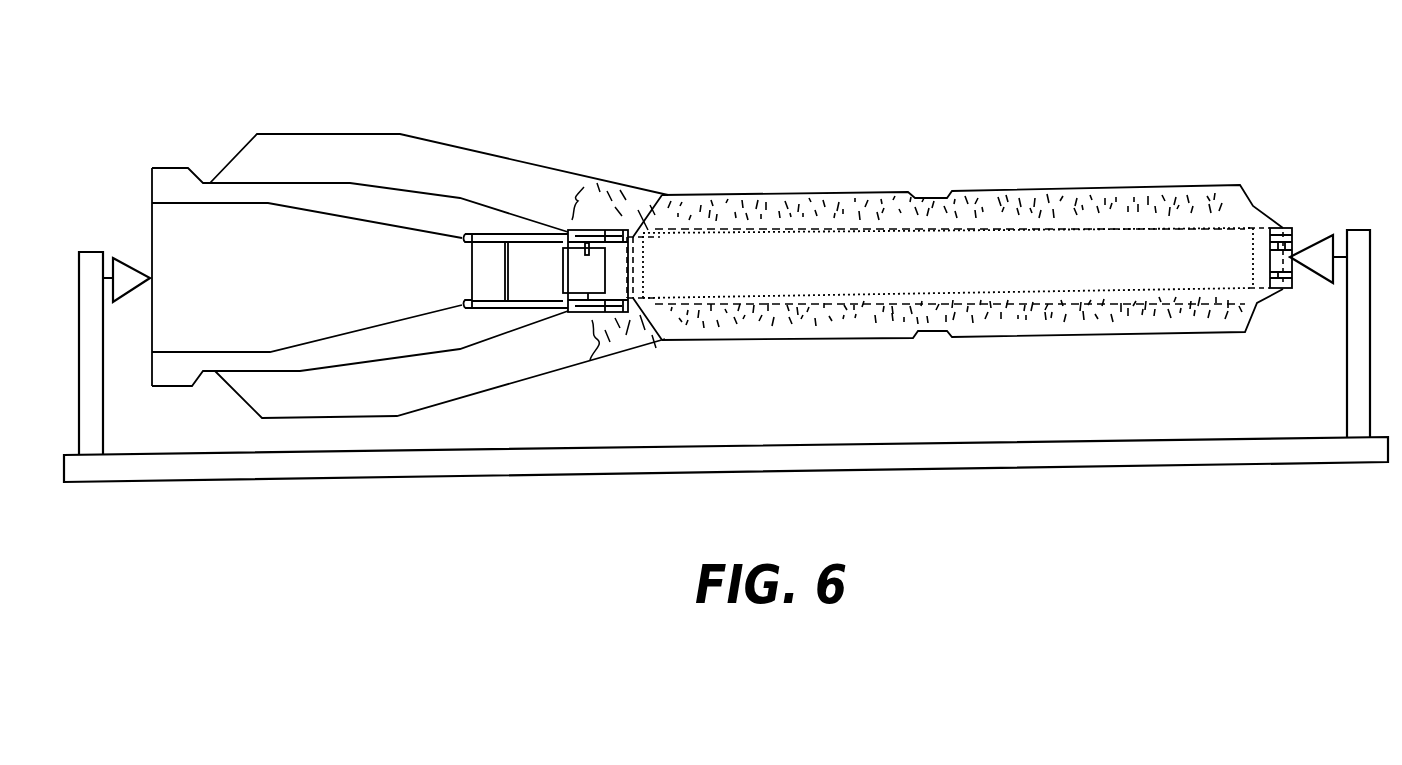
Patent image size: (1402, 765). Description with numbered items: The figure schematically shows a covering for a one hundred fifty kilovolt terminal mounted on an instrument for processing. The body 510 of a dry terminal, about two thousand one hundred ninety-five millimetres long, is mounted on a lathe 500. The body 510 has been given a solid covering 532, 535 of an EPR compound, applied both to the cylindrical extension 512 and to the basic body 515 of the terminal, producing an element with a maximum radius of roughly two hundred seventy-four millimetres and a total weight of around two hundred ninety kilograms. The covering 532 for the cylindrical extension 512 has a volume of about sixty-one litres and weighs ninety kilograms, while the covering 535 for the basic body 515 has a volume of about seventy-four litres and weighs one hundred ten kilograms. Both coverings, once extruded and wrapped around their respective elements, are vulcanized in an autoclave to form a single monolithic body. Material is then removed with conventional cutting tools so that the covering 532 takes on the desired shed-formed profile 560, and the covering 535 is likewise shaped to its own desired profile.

The lathe 500 is at (1347, 354).
The body of a dry terminal 510 is at (1301, 240).
The cylindrical extension 512 is at (1223, 243).
The basic body 515 is at (383, 330).
The covering for the cylindrical extension 532 is at (738, 205).
The covering for the basic body 535 is at (458, 167).
The shed-formed profile 560 is at (1188, 210).